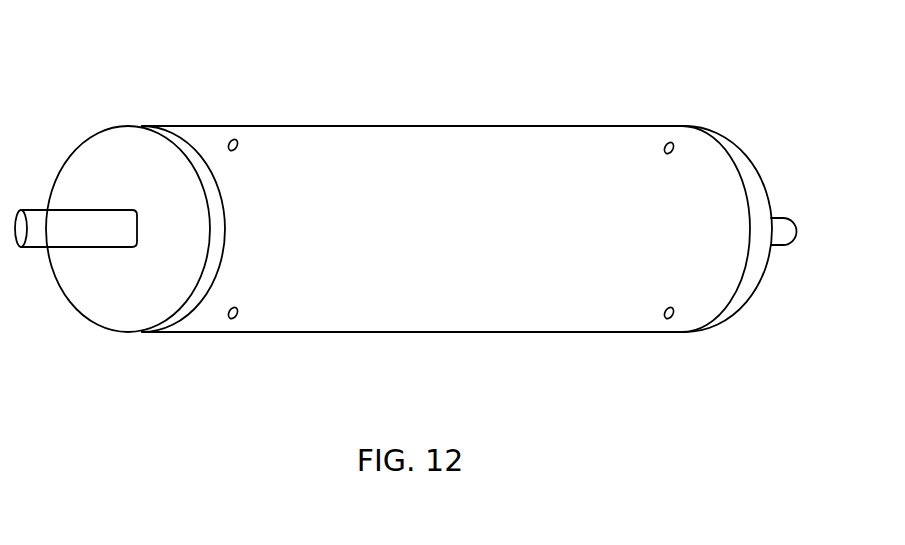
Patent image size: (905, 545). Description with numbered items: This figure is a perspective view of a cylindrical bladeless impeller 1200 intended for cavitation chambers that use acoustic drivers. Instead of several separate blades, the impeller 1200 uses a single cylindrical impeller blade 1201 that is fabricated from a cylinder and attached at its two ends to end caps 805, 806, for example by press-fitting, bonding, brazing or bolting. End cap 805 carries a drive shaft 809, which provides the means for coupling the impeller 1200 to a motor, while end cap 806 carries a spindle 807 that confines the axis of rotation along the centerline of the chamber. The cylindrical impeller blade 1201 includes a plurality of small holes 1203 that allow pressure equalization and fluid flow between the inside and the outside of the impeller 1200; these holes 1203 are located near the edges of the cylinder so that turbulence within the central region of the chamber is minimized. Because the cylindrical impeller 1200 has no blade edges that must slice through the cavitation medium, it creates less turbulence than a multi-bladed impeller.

The impeller 1200 is at (562, 113).
The cylindrical impeller blade 1201 is at (460, 322).
The holes 1203 is at (235, 140).
The end cap 805 is at (112, 310).
The end cap 806 is at (742, 168).
The spindle 807 is at (787, 233).
The drive shaft 809 is at (88, 225).